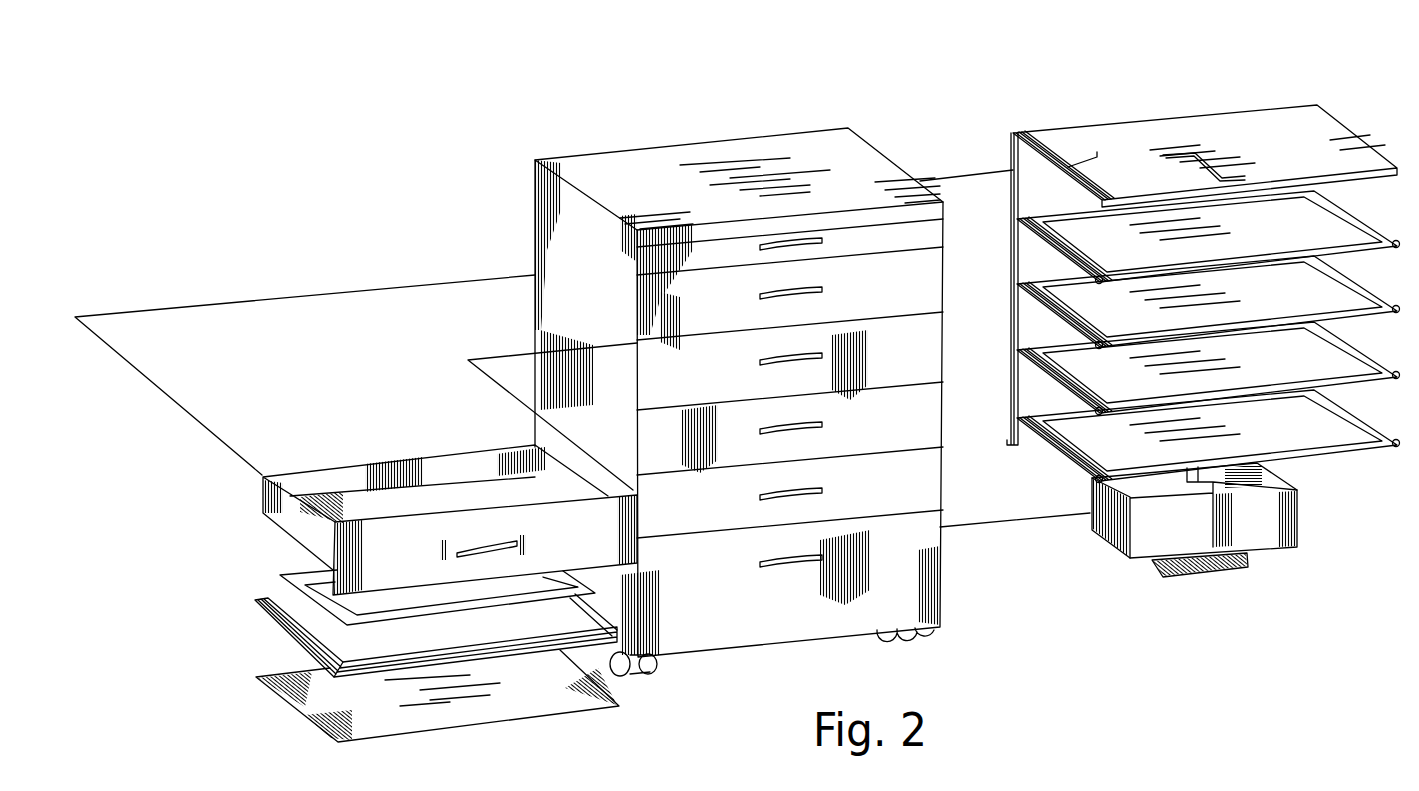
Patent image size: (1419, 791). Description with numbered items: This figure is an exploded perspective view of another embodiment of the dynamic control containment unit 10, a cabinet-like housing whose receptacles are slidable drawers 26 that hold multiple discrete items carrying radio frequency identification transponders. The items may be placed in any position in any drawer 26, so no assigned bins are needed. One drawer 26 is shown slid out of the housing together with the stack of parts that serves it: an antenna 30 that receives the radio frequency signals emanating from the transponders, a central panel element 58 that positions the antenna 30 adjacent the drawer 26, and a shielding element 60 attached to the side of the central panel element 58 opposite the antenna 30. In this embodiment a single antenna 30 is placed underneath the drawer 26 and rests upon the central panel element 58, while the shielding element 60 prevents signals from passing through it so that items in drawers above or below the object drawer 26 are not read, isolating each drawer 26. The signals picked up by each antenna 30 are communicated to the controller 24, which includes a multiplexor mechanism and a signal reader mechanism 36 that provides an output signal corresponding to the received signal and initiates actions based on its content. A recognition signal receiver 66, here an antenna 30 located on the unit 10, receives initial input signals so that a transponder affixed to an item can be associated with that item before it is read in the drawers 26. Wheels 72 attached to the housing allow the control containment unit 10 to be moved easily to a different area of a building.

The dynamic control containment unit 10 is at (528, 128).
The controller 24 is at (1120, 573).
The drawer 26 is at (375, 463).
The antenna 30 is at (1087, 158).
The signal reader mechanism 36 is at (280, 557).
The central panel element 58 is at (283, 598).
The shielding element 60 is at (517, 702).
The recognition signal receiver 66 is at (1222, 150).
The wheels 72 is at (660, 660).